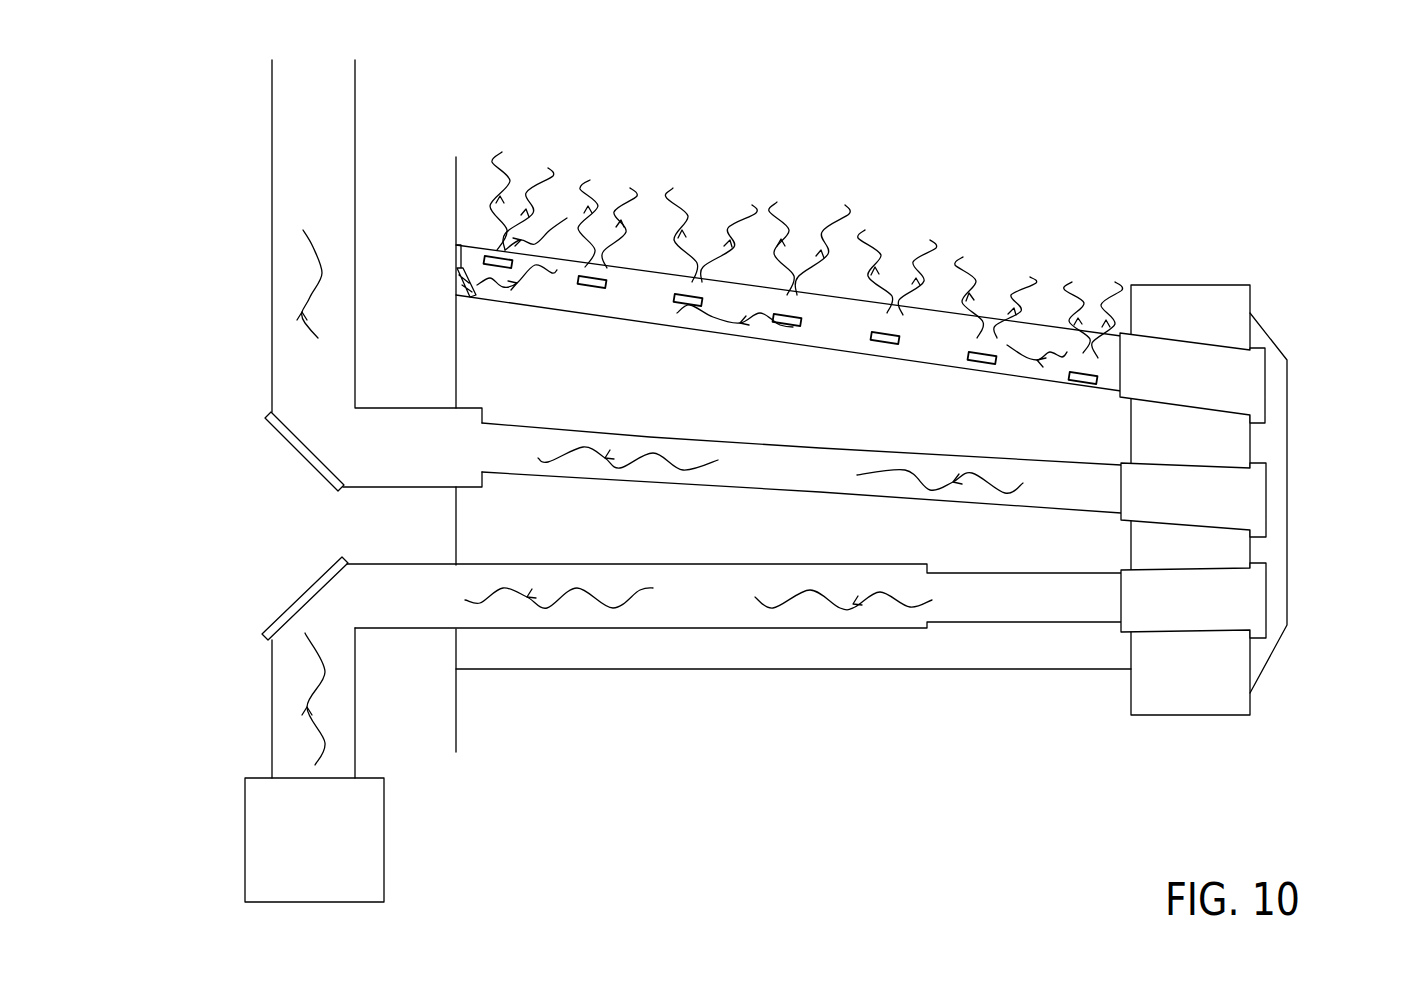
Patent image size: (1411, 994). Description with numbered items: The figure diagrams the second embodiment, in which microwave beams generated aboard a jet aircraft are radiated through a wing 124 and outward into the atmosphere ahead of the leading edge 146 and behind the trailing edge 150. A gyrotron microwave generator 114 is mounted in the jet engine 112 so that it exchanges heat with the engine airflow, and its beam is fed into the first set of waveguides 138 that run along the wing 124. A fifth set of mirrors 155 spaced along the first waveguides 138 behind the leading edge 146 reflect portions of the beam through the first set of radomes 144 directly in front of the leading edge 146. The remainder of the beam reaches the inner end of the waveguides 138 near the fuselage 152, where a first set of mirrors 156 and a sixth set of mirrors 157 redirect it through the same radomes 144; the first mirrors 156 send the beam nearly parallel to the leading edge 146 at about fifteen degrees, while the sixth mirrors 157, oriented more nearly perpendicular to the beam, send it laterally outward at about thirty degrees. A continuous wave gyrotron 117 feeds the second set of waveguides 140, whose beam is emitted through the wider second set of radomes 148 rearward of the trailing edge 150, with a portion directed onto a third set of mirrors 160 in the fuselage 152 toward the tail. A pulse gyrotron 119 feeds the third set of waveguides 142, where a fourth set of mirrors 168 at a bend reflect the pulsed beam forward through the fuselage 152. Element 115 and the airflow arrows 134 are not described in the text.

The jet engine 112 is at (1207, 320).
The microwave electromagnetic radiation generator 114 is at (1257, 347).
The upper outlet 115 is at (1248, 390).
The continuous wave gyrotron 117 is at (1248, 600).
The pulse gyrotron 119 is at (1246, 503).
The wing 124 is at (585, 660).
The air flow 134 is at (717, 338).
The first set of waveguides 138 is at (820, 347).
The second set of waveguides 140 is at (827, 630).
The third set of waveguides 142 is at (797, 495).
The first set of radomes 144 is at (830, 300).
The leading edge 146 is at (937, 312).
The second set of radomes 148 is at (903, 669).
The trailing edge 150 is at (757, 672).
The fuselage 152 is at (422, 533).
The fifth set of mirrors 155 is at (680, 305).
The first set of mirrors 156 is at (452, 258).
The sixth set of mirrors 157 is at (457, 283).
The third set of mirrors 160 is at (365, 857).
The fourth set of mirrors 168 is at (298, 455).